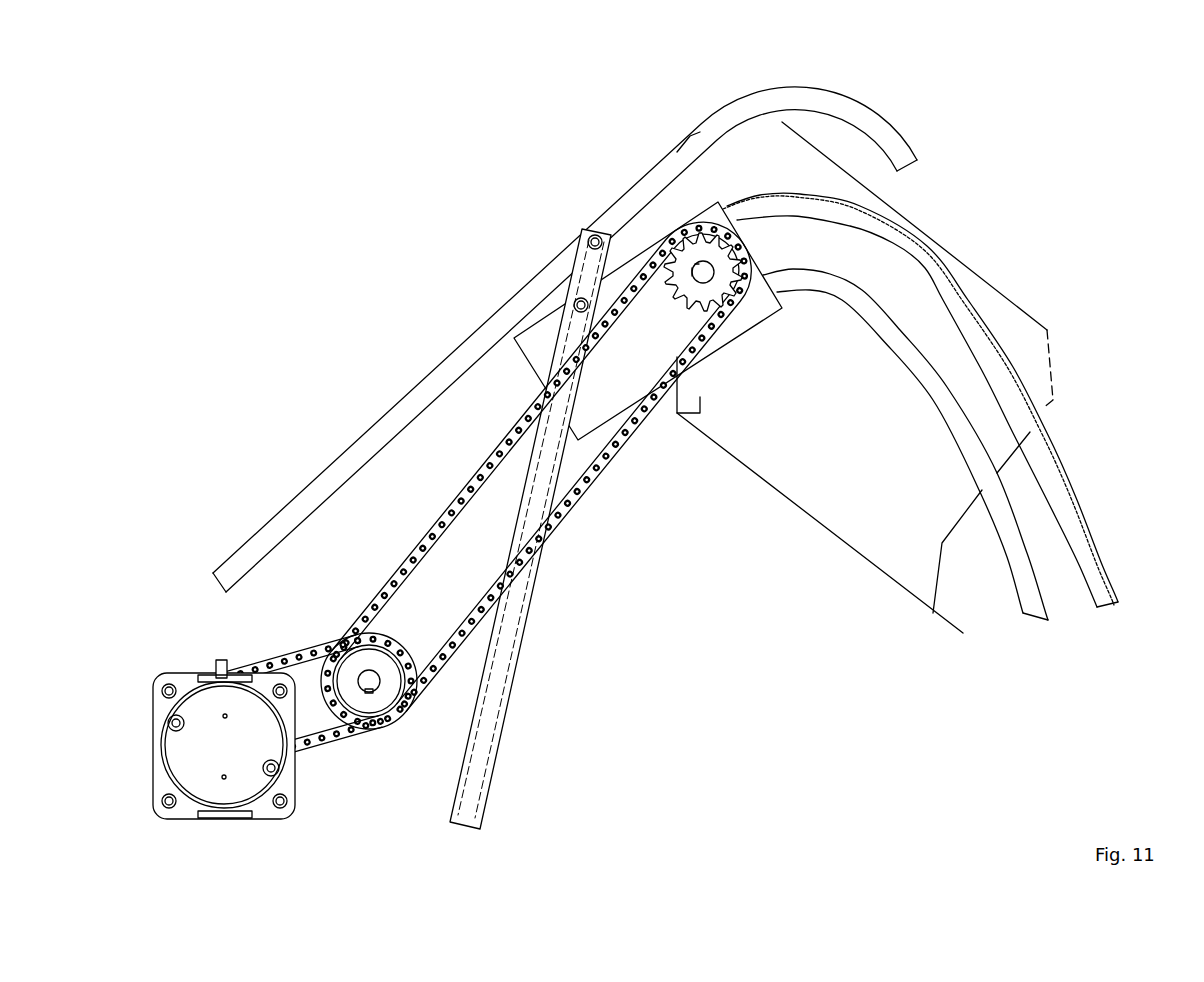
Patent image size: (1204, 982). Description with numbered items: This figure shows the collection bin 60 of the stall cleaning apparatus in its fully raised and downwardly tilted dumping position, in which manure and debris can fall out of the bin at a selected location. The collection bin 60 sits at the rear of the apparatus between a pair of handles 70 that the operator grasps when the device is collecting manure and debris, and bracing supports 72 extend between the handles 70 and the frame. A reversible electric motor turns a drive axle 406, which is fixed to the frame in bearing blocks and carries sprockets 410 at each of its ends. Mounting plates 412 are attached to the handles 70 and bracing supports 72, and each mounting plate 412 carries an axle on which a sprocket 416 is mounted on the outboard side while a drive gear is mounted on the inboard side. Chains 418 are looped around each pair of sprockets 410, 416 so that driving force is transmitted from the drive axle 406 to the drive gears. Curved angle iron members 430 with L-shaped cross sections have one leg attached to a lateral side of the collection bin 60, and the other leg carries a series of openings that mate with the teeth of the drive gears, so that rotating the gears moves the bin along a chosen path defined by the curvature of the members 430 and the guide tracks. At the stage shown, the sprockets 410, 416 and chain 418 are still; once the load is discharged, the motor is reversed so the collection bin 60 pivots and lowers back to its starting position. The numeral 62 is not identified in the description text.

The collection bin 60 is at (1015, 327).
The curved guide 62 is at (1033, 610).
The handles 70 is at (673, 170).
The bracing supports 72 is at (473, 770).
The drive axle 406 is at (368, 684).
The sprockets 410 is at (386, 688).
The mounting plates 412 is at (753, 308).
The sprocket 416 is at (700, 253).
The chains 418 is at (577, 493).
The curved angle iron members 430 is at (1057, 460).